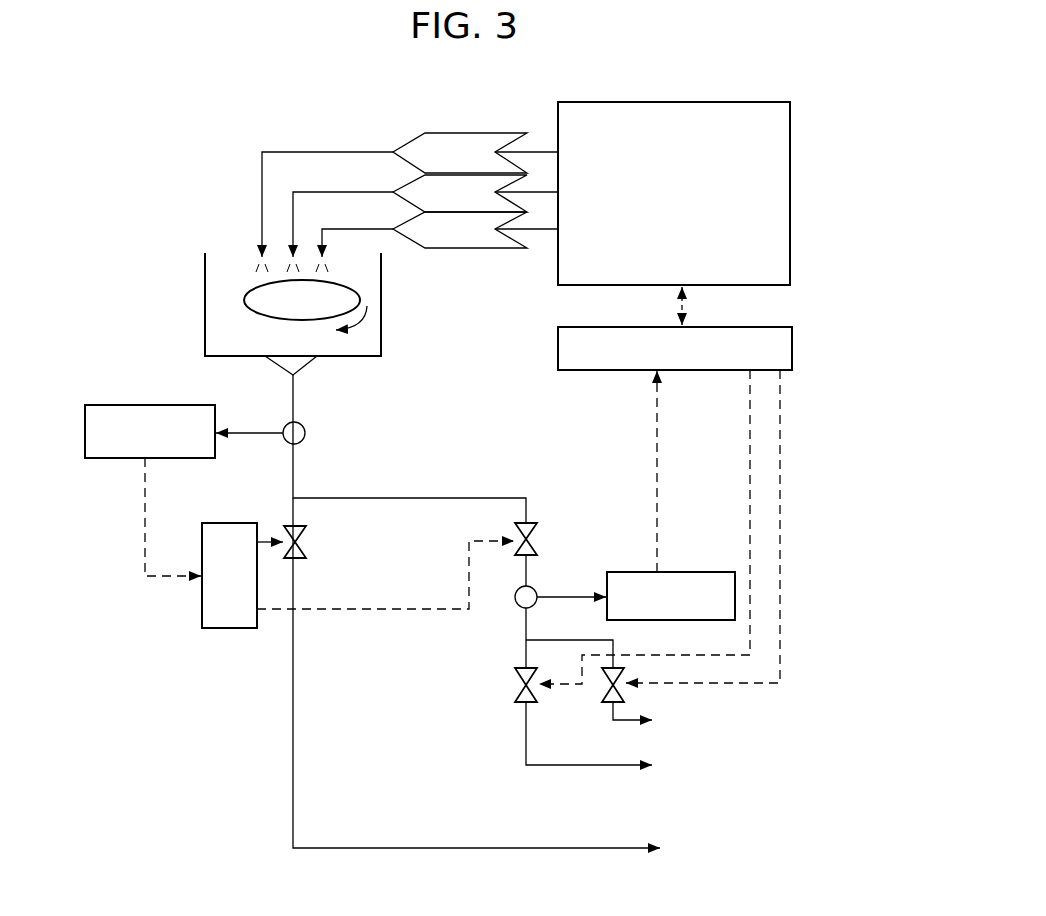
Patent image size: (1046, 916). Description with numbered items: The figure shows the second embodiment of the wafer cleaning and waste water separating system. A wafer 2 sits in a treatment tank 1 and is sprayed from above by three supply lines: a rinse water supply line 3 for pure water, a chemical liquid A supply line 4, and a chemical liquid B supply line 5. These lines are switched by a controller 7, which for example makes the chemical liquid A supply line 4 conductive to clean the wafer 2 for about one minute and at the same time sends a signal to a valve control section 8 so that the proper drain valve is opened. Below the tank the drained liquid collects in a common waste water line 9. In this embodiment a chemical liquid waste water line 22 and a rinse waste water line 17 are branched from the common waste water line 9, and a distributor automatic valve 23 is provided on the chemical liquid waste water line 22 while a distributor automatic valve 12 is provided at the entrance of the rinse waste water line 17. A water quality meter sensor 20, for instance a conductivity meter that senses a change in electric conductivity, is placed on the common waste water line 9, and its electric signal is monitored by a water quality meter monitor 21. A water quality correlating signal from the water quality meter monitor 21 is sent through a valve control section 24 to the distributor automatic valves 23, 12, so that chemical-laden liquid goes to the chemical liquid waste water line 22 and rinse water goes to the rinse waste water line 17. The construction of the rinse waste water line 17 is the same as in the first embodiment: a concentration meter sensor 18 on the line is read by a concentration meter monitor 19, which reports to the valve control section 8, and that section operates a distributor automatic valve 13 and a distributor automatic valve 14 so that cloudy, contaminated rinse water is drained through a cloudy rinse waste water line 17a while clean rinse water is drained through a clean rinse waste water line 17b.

The treatment tank 1 is at (205, 313).
The wafer 2 is at (260, 319).
The rinse water supply line 3 is at (315, 150).
The chemical liquid A supply line 4 is at (340, 190).
The chemical liquid B supply line 5 is at (350, 228).
The controller 7 is at (628, 115).
The valve control section 8 is at (558, 356).
The common waste water line 9 is at (293, 475).
The distributor automatic valve 12 is at (527, 556).
The distributor automatic valve 13 is at (515, 701).
The distributor automatic valve 14 is at (602, 701).
The rinse waste water line 17 is at (526, 633).
The cloudy rinse waste water line 17a is at (526, 745).
The clean rinse waste water line 17b is at (626, 722).
The concentration meter sensor 18 is at (537, 605).
The concentration meter monitor 19 is at (678, 572).
The water quality meter sensor 20 is at (305, 430).
The water quality meter monitor 21 is at (139, 405).
The chemical liquid waste water line 22 is at (293, 703).
The distributor automatic valve 23 is at (305, 563).
The valve control section 24 is at (222, 630).